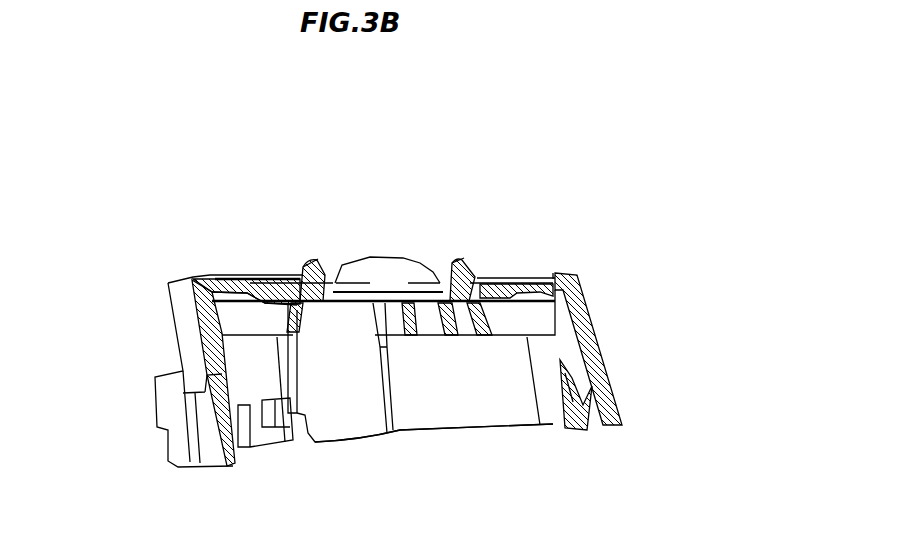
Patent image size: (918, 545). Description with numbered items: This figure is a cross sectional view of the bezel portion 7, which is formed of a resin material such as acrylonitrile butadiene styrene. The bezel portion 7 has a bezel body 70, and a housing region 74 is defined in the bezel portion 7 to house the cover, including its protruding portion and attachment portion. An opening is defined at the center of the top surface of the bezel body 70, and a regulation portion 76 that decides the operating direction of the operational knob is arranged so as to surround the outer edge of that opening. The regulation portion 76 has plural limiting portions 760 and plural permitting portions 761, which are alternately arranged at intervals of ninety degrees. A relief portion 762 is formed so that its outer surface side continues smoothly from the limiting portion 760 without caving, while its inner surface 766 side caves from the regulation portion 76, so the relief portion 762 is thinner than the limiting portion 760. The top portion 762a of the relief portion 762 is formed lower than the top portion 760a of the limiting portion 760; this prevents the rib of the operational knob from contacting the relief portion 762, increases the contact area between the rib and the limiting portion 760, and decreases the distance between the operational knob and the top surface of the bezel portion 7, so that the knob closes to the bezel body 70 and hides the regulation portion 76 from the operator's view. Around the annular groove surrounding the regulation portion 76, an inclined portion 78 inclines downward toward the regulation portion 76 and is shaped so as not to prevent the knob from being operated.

The bezel portion 7 is at (623, 106).
The bezel body 70 is at (592, 365).
The housing region 74 is at (467, 402).
The regulation portion 76 is at (478, 186).
The inclined portion 78 is at (503, 277).
The limiting portion 760 is at (303, 268).
The top portion of the limiting portion 760a is at (397, 265).
The permitting portion 761 is at (433, 337).
The relief portion 762 is at (330, 263).
The top portion of the relief portion 762a is at (348, 265).
The inner surface 766 is at (303, 260).